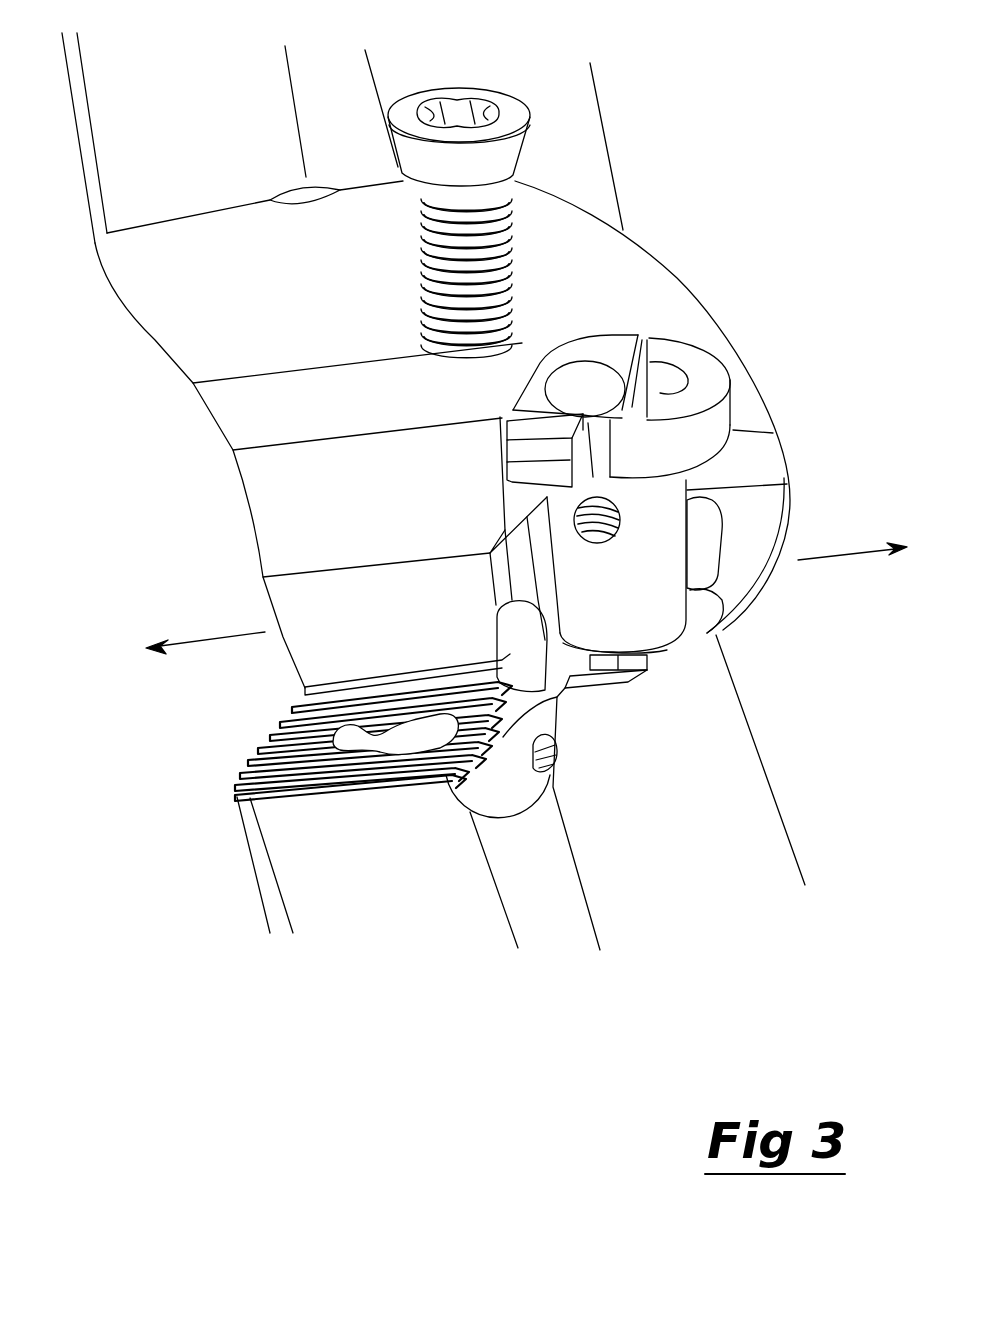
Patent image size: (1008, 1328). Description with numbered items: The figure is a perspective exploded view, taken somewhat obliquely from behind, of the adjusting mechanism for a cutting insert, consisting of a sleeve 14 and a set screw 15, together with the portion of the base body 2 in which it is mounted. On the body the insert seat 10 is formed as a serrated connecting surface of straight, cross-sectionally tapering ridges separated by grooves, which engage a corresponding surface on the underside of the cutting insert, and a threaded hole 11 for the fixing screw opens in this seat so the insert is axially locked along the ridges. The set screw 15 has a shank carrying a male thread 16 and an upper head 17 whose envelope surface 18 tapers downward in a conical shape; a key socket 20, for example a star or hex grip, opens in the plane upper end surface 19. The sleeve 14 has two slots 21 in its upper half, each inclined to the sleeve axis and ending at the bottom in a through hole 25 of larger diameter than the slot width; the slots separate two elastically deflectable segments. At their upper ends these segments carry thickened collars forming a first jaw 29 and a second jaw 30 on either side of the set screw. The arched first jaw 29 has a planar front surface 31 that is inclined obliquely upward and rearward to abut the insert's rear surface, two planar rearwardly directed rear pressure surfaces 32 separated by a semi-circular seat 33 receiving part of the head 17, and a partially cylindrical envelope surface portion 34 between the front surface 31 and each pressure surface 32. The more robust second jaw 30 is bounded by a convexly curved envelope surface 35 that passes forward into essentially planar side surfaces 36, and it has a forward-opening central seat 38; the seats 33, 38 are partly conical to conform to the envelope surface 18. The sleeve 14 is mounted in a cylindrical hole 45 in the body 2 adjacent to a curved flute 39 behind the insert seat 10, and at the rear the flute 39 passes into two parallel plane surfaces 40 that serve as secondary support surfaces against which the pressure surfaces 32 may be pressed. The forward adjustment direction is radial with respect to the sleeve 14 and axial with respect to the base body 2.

The base body 2 is at (290, 887).
The insert seat 10 is at (278, 722).
The threaded hole 11 is at (383, 735).
The sleeve 14 is at (787, 484).
The set screw 15 is at (497, 179).
The male thread 16 is at (420, 257).
The upper head 17 is at (527, 90).
The envelope surface 18 is at (402, 153).
The upper end surface 19 is at (406, 112).
The key socket 20 is at (473, 100).
The slot 21 is at (653, 340).
The through hole 25 is at (606, 557).
The first jaw 29 is at (595, 393).
The second jaw 30 is at (715, 360).
The front surface 31 is at (527, 383).
The rear pressure surface 32 is at (635, 357).
The seat 33 is at (568, 387).
The envelope surface portion 34 is at (520, 473).
The envelope surface 35 is at (670, 429).
The side surface 36 is at (633, 462).
The central seat 38 is at (660, 393).
The flute 39 is at (499, 801).
The plane surface 40 is at (557, 750).
The cylindrical hole 45 is at (540, 753).